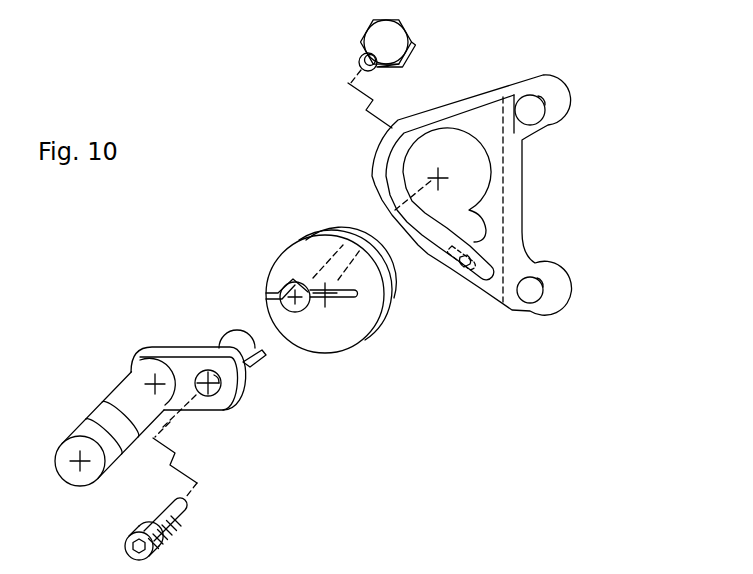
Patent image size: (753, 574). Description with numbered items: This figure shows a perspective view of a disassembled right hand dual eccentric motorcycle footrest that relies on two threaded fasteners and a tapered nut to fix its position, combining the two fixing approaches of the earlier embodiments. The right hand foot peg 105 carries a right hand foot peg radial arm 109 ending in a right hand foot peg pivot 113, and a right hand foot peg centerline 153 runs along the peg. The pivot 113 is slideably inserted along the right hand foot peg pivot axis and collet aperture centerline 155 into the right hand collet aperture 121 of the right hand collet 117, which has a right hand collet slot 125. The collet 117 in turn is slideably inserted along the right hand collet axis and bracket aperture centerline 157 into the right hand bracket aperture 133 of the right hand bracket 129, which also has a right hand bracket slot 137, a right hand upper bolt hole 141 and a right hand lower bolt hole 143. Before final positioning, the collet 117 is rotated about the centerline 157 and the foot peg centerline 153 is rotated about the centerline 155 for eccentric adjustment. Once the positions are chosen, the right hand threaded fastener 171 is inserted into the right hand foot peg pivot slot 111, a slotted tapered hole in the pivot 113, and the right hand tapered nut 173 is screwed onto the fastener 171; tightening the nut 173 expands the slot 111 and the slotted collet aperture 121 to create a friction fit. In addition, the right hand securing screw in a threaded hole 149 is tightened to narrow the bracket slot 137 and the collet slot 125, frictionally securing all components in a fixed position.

The right hand foot peg 105 is at (110, 402).
The right hand foot peg radial arm 109 is at (208, 412).
The right hand foot peg pivot slot 111 is at (240, 364).
The right hand foot peg pivot 113 is at (232, 354).
The right hand collet 117 is at (300, 223).
The right hand collet aperture 121 is at (282, 283).
The right hand collet slot 125 is at (350, 298).
The right hand bracket 129 is at (533, 178).
The right hand bracket aperture 133 is at (388, 181).
The right hand bracket slot 137 is at (452, 253).
The right hand upper bolt hole 141 is at (545, 111).
The right hand lower bolt hole 143 is at (543, 292).
The right hand securing screw in a threaded hole 149 is at (469, 276).
The right hand foot peg centerline 153 is at (142, 395).
The right hand foot peg pivot axis and collet aperture centerline 155 is at (260, 332).
The right hand collet axis and bracket aperture centerline 157 is at (388, 232).
The right hand threaded fastener 171 is at (182, 528).
The right hand tapered nut 173 is at (430, 44).